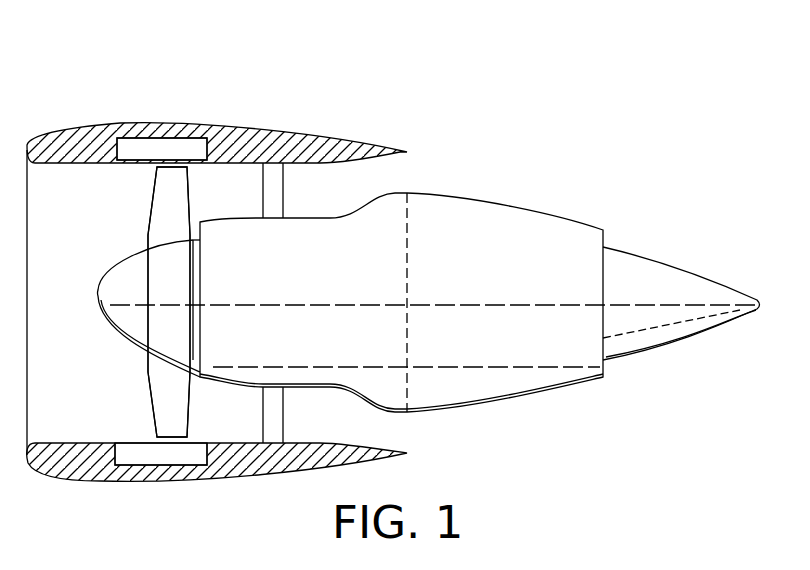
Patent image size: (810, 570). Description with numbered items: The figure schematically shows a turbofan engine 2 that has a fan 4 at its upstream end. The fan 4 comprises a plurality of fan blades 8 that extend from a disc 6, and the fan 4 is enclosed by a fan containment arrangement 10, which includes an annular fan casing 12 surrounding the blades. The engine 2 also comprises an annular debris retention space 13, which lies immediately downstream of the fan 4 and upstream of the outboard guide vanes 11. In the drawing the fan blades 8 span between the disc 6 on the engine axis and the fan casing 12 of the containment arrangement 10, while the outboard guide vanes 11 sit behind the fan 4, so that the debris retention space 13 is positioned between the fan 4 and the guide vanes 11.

The turbofan engine 2 is at (227, 44).
The fan 4 is at (138, 218).
The disc 6 is at (108, 292).
The fan blades 8 is at (162, 395).
The fan containment arrangement 10 is at (163, 150).
The outboard guide vanes 11 is at (278, 172).
The annular fan casing 12 is at (158, 470).
The annular debris retention space 13 is at (238, 425).